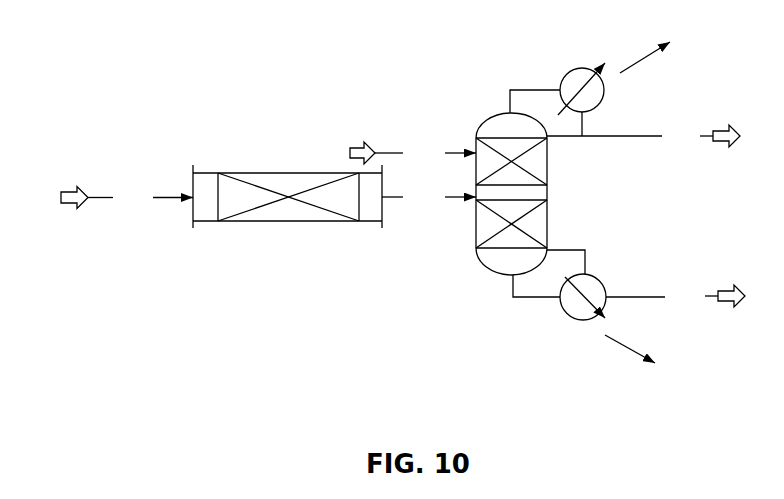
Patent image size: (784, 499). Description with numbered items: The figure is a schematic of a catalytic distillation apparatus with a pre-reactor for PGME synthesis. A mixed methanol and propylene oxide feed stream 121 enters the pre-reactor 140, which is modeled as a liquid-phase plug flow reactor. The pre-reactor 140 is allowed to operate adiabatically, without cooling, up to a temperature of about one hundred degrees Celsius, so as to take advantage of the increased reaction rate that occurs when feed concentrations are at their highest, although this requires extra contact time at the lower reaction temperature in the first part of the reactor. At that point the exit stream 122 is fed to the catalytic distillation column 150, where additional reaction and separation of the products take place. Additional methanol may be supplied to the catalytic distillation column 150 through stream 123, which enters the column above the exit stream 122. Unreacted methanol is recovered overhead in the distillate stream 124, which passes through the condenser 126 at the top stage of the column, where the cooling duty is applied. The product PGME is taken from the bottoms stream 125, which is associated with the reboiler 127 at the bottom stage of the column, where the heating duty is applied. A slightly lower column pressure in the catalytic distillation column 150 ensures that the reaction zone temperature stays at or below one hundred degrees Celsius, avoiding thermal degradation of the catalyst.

The mixed methanol and propylene oxide feed stream 121 is at (127, 199).
The exit stream 122 is at (429, 197).
The stream 123 is at (413, 153).
The distillate stream 124 is at (625, 105).
The bottoms stream 125 is at (629, 285).
The condenser 126 is at (678, 44).
The reboiler 127 is at (658, 366).
The pre-reactor 140 is at (287, 196).
The catalytic distillation column 150 is at (511, 194).